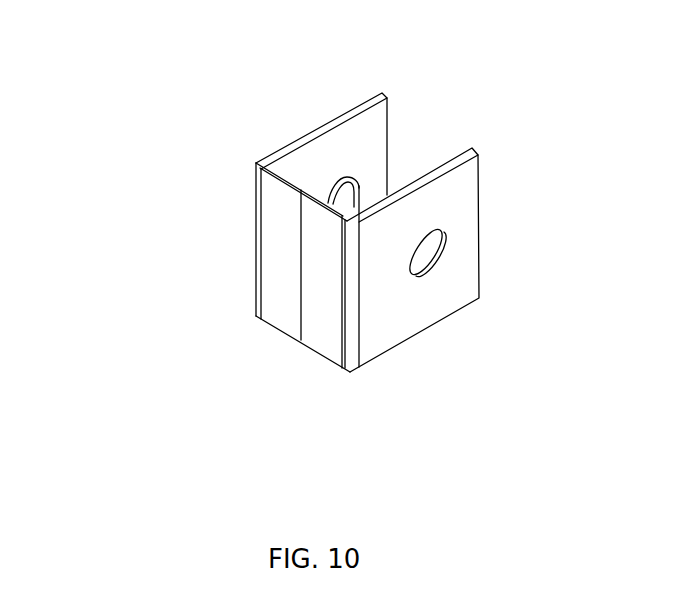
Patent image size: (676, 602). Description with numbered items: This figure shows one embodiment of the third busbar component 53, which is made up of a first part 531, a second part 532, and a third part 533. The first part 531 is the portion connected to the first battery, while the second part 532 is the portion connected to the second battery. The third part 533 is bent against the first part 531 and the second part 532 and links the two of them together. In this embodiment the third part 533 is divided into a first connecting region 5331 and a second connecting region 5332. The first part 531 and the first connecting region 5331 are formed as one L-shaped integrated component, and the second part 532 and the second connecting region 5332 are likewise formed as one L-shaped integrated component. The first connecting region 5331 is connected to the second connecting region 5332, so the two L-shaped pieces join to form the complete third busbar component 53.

The third busbar component 53 is at (150, 102).
The first part 531 is at (418, 323).
The second part 532 is at (345, 143).
The third part 533 is at (310, 418).
The first connecting region 5331 is at (333, 345).
The second connecting region 5332 is at (283, 318).